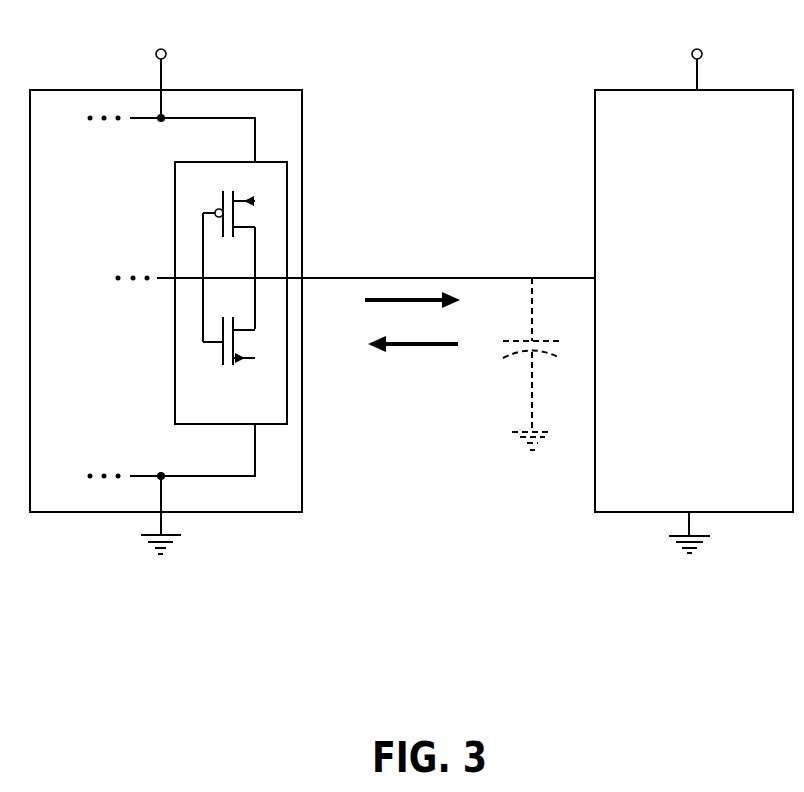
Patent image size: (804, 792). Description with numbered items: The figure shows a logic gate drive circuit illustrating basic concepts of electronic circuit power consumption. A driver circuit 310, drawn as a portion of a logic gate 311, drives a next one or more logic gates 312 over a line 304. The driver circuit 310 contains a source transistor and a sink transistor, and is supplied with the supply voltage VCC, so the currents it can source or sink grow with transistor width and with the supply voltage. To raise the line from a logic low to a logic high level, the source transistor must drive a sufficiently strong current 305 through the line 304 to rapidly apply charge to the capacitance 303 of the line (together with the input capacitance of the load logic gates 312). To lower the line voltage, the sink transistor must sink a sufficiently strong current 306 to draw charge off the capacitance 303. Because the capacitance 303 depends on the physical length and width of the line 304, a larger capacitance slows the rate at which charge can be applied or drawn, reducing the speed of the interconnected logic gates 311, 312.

The logic gate 311 is at (225, 90).
The next logic gate(s) 312 is at (622, 90).
The driver circuit 310 is at (175, 190).
The line 304 is at (440, 278).
The source current 305 is at (411, 304).
The sink current 306 is at (411, 348).
The capacitance 303 is at (508, 378).